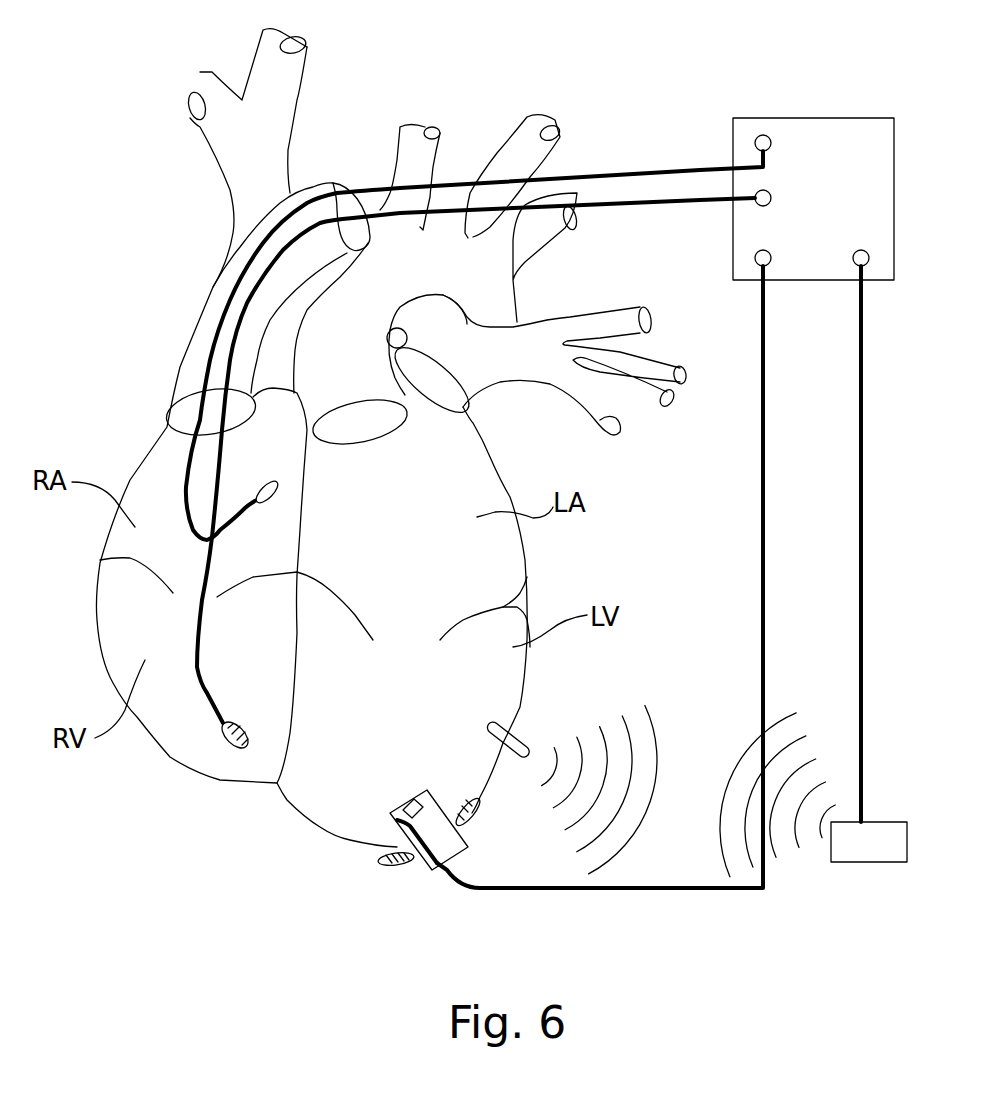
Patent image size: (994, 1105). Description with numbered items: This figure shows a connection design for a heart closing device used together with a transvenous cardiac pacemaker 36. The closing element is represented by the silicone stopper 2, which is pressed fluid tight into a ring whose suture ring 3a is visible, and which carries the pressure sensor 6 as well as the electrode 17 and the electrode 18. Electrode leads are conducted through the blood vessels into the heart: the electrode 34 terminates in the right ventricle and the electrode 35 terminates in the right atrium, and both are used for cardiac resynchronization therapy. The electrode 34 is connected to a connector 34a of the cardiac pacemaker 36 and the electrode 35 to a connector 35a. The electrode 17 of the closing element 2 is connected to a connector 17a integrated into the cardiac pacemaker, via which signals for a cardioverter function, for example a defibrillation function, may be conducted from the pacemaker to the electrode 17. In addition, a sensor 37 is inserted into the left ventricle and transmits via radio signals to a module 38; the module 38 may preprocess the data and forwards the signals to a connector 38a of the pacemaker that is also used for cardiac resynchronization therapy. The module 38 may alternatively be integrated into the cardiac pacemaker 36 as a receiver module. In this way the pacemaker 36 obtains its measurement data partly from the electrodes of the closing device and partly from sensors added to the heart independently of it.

The silicone stopper 2 is at (400, 832).
The suture ring 3a is at (393, 865).
The pressure sensor 6 is at (410, 800).
The electrode 17 is at (397, 820).
The connector 17a is at (771, 258).
The electrode 18 is at (440, 790).
The electrode 34 is at (215, 700).
The connector 34a is at (771, 198).
The electrode 35 is at (185, 478).
The connector 35a is at (771, 143).
The transvenous cardiac pacemaker 36 is at (773, 118).
The sensor 37 is at (525, 732).
The module 38 is at (878, 862).
The connector 38a is at (868, 262).